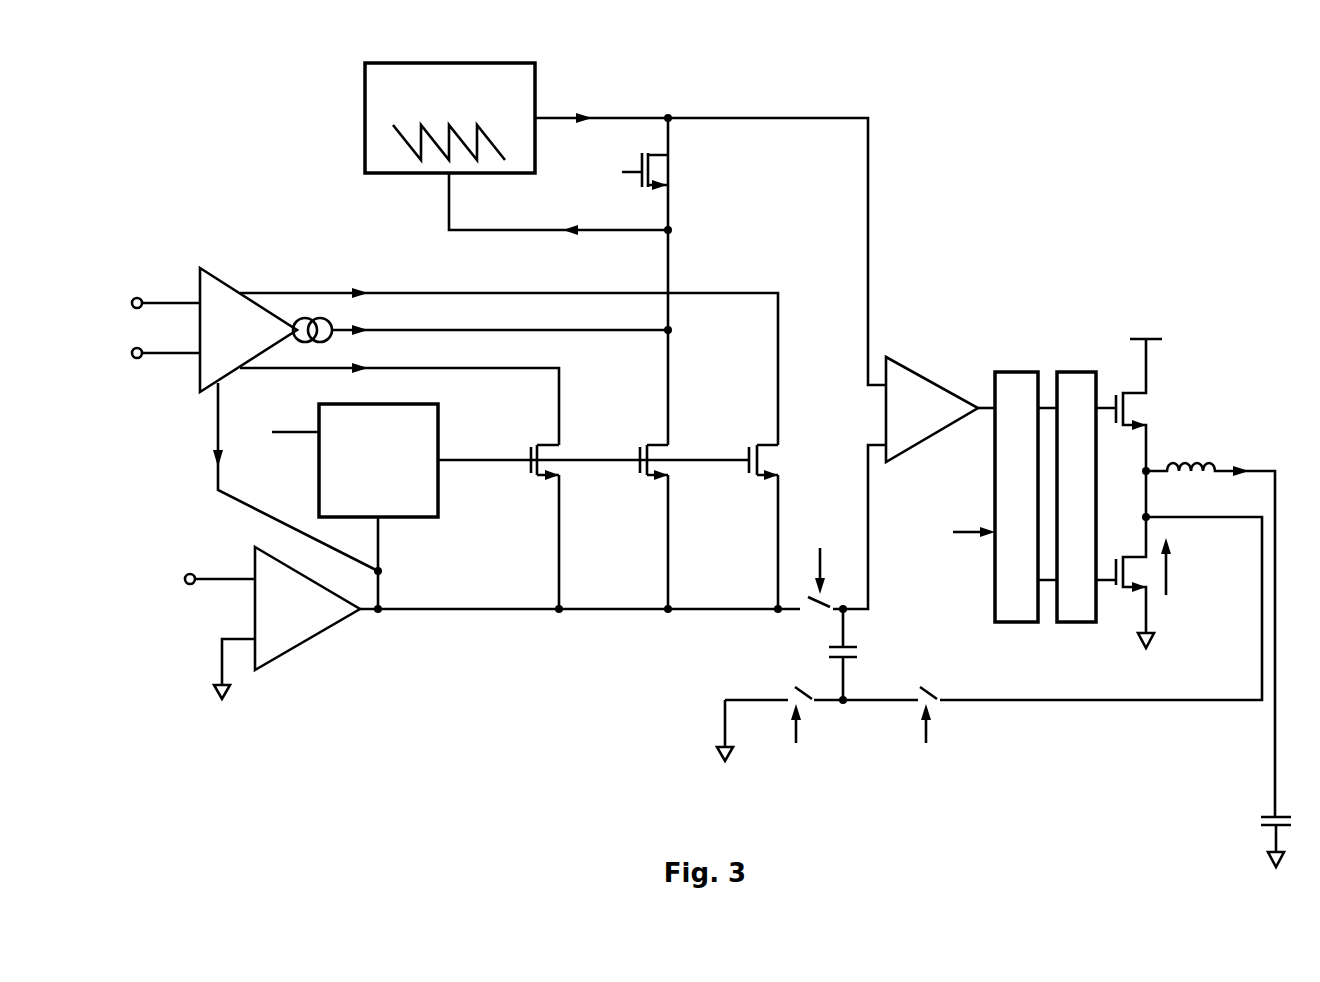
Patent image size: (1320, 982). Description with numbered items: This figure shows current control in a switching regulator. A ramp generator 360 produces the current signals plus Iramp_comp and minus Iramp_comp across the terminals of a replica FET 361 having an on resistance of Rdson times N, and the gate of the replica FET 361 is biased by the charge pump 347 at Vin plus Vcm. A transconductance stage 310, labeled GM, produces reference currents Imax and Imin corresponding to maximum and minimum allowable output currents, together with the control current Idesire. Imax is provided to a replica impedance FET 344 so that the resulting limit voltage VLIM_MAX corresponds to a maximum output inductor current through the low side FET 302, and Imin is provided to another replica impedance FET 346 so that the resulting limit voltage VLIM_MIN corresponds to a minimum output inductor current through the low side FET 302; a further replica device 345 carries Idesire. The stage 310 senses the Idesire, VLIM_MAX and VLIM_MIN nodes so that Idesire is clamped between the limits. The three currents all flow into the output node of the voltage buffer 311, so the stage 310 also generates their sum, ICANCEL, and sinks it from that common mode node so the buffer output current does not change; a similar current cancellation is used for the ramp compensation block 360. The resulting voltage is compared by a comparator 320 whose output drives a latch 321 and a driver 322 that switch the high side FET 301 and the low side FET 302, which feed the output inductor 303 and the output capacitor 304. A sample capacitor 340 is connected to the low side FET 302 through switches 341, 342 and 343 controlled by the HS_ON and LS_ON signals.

The high-side switch transistor 301 is at (1138, 417).
The low-side switch transistor 302 is at (1177, 595).
The inductor 303 is at (1216, 622).
The output capacitor 304 is at (1248, 839).
The transconductance stage 310 is at (212, 268).
The voltage buffer VBUFF 311 is at (297, 648).
The comparator 320 is at (905, 366).
The latch 321 is at (1015, 372).
The driver 322 is at (1075, 622).
The sample capacitor 340 is at (875, 656).
The switch 341 is at (838, 538).
The switch 342 is at (780, 724).
The switch 343 is at (1052, 643).
The replica impedance FET 344 is at (562, 452).
The transistor 345 is at (672, 452).
The replica impedance FET 346 is at (782, 460).
The charge pump 347 is at (415, 518).
The ramp generator 360 is at (507, 62).
The replica FET 361 is at (647, 184).